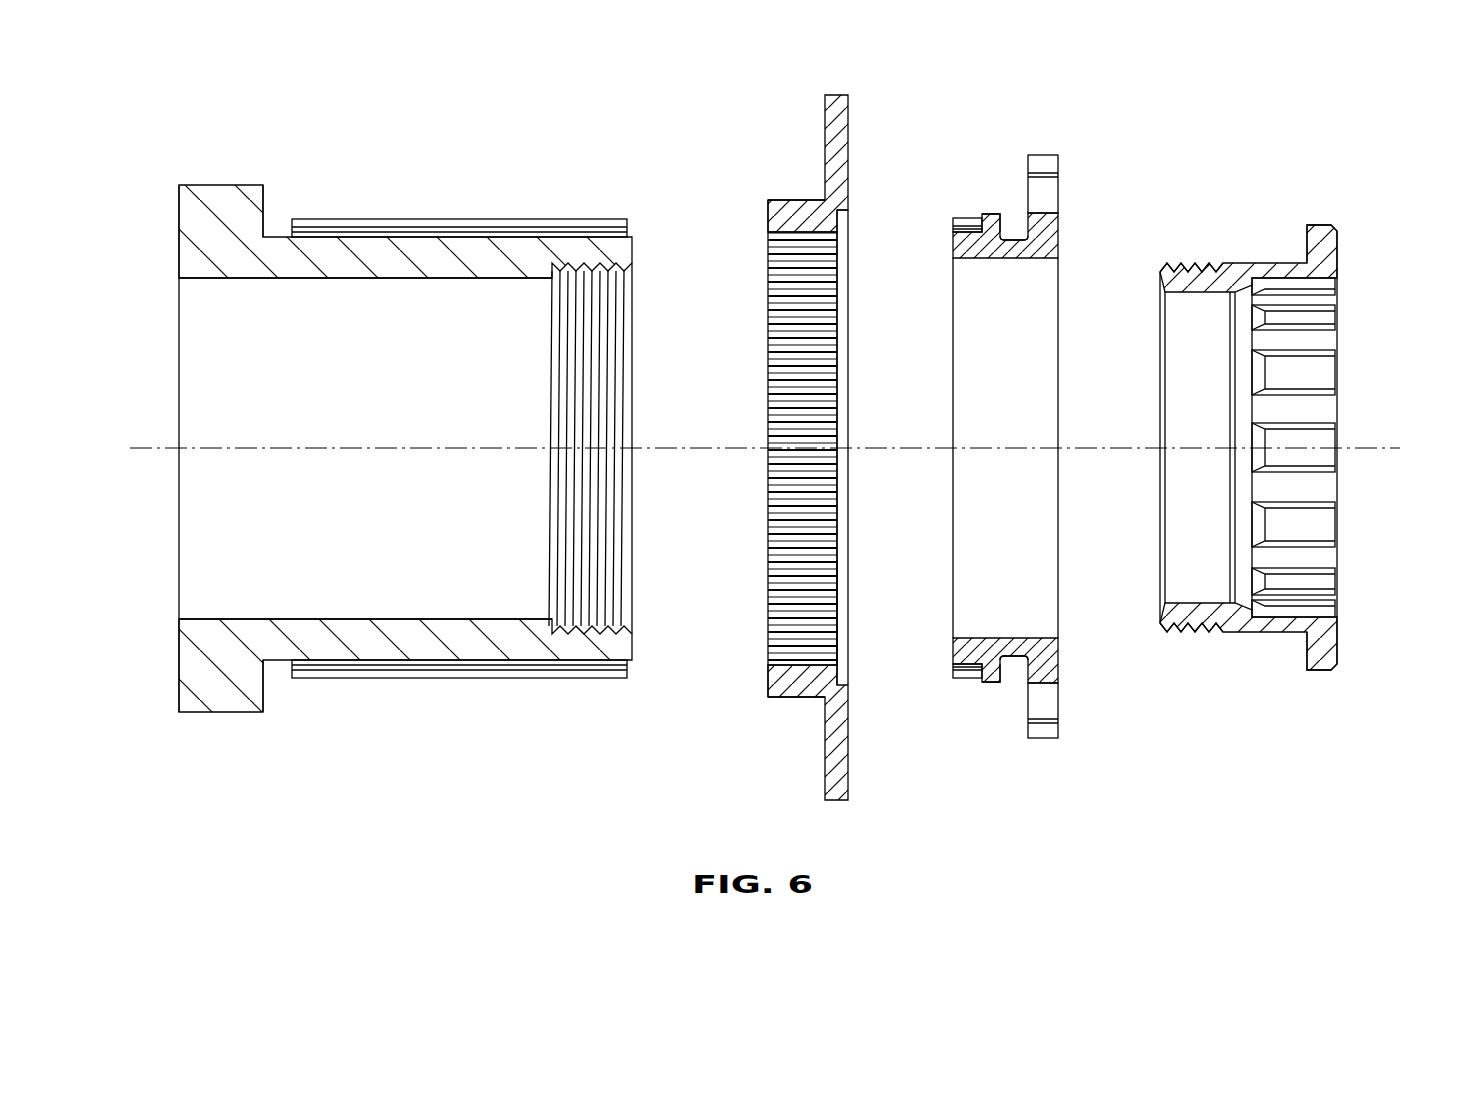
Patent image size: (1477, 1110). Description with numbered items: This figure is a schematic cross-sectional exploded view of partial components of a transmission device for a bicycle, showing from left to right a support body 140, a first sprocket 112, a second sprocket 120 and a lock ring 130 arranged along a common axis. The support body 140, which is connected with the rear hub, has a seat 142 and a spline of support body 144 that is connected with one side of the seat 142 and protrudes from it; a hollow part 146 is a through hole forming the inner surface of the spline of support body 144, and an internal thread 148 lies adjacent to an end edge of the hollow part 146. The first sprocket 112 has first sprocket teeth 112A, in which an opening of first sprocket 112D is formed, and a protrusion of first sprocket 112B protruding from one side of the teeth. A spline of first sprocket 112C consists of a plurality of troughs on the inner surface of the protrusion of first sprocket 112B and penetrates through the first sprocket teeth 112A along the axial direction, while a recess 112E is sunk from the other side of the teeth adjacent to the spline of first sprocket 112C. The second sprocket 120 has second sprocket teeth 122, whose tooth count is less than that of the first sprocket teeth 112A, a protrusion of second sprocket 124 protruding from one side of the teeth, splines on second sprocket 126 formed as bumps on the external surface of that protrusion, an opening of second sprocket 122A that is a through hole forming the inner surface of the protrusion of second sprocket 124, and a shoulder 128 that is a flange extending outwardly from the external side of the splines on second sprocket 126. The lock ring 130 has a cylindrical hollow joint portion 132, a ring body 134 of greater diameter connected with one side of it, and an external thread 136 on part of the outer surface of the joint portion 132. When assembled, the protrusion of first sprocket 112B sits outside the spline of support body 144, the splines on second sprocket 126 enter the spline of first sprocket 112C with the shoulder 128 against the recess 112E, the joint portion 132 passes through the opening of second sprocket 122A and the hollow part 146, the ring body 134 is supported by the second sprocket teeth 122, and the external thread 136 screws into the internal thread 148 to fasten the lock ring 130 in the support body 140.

The first sprocket 112 is at (813, 437).
The first sprocket teeth 112A is at (832, 94).
The protrusion of first sprocket 112B is at (780, 204).
The spline of first sprocket 112C is at (775, 623).
The opening of first sprocket 112D is at (840, 641).
The recess 112E is at (842, 218).
The second sprocket 120 is at (1038, 466).
The second sprocket teeth 122 is at (1045, 192).
The opening of second sprocket 122A is at (1008, 576).
The protrusion of second sprocket 124 is at (1010, 660).
The splines on second sprocket 126 is at (965, 226).
The shoulder 128 is at (988, 220).
The lock ring 130 is at (1315, 430).
The joint portion 132 is at (1254, 265).
The ring body 134 is at (1330, 240).
The external thread 136 is at (1185, 262).
The support body 140 is at (402, 445).
The seat 142 is at (230, 695).
The spline of support body 144 is at (412, 218).
The hollow part 146 is at (232, 357).
The internal thread 148 is at (588, 278).